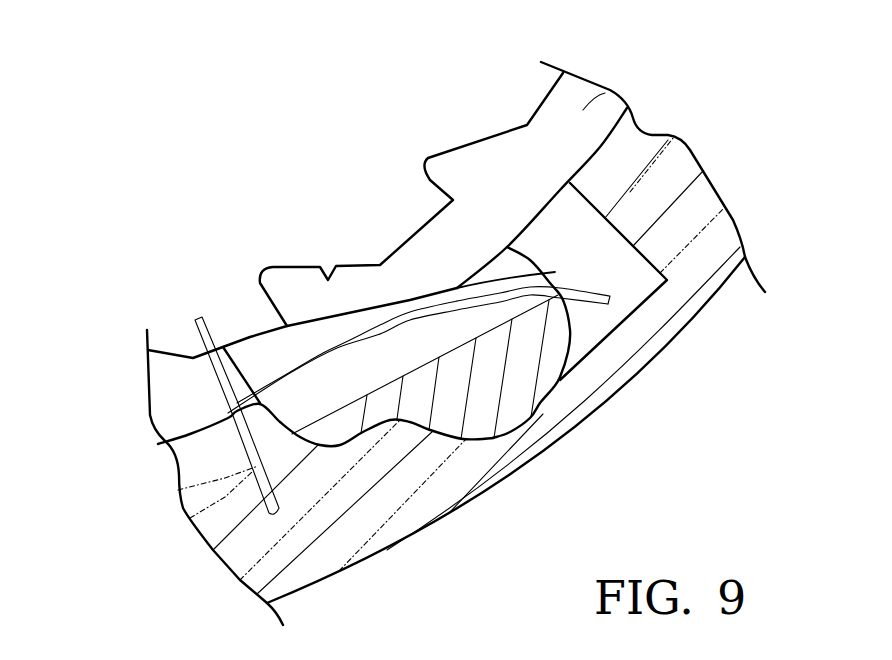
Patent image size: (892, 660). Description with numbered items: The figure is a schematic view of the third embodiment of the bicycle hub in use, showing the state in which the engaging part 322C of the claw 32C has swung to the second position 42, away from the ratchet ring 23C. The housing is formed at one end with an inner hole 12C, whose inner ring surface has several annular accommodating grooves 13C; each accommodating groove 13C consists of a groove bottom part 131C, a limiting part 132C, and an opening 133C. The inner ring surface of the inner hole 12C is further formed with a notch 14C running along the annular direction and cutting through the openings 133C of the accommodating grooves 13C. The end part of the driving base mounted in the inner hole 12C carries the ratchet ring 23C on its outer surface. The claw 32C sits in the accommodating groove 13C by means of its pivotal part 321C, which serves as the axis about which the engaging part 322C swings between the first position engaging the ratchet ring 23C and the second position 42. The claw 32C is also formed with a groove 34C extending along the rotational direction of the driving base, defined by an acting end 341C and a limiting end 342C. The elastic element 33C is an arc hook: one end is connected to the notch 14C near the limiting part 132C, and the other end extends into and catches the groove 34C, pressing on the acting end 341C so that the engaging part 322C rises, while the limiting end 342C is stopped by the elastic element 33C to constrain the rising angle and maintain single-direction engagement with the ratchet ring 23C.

The inner hole 12C is at (610, 90).
The ratchet ring 23C is at (326, 272).
The notch 14C is at (193, 437).
The opening 133C is at (227, 352).
The engaging part 322C is at (220, 342).
The second position 42 is at (266, 332).
The limiting part 132C is at (347, 447).
The annular accommodating groove 13C is at (418, 534).
The groove bottom part 131C is at (533, 418).
The pivotal part 321C is at (540, 355).
The claw 32C is at (418, 297).
The groove 34C is at (477, 333).
The acting end 341C is at (523, 272).
The limiting end 342C is at (305, 418).
The elastic element 33C is at (390, 323).